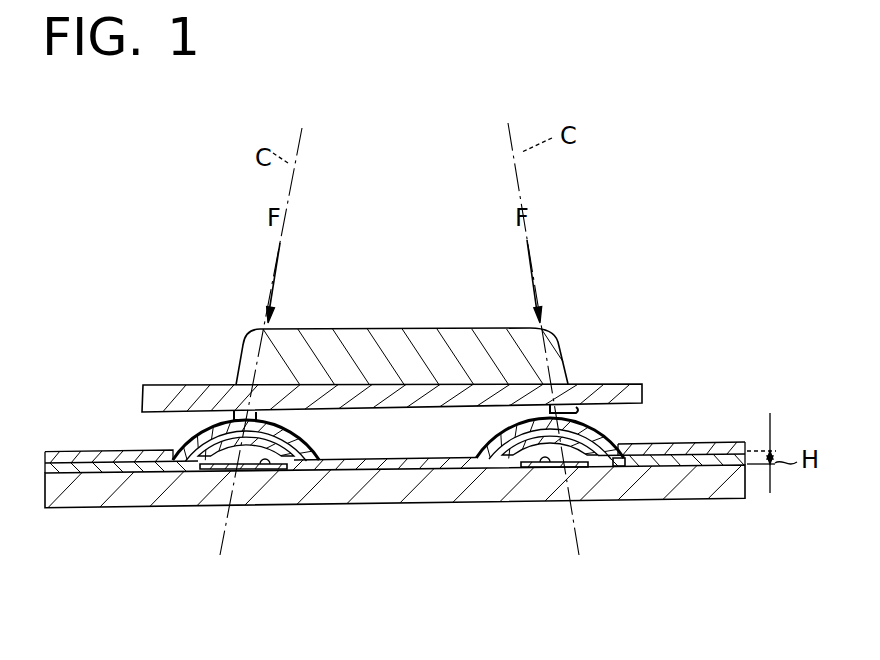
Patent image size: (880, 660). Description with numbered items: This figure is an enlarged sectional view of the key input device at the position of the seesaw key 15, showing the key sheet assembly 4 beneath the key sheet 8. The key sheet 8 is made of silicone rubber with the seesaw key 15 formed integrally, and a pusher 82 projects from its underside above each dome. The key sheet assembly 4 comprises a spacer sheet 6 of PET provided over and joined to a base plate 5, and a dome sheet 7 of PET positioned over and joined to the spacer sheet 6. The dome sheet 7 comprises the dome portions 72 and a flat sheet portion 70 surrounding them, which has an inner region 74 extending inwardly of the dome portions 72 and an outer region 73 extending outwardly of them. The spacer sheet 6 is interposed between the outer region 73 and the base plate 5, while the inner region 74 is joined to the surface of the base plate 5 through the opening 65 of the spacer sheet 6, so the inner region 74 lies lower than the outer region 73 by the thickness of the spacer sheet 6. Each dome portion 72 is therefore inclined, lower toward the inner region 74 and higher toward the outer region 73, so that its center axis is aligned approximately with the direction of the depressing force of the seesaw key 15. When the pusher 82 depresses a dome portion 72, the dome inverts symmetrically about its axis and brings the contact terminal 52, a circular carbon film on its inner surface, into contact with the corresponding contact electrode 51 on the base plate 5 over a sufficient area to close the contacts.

The key sheet assembly 4 is at (674, 360).
The base plate 5 is at (635, 476).
The spacer sheet 6 is at (700, 463).
The dome sheet 7 is at (695, 455).
The key sheet 8 is at (157, 385).
The seesaw key 15 is at (401, 327).
The contact electrode 51 is at (269, 470).
The contact terminal 52 is at (214, 456).
The opening 65 is at (609, 469).
The flat sheet portion 70 is at (737, 444).
The dome portion 72 is at (190, 448).
The outer region 73 is at (80, 450).
The inner region 74 is at (388, 458).
The pusher 82 is at (232, 414).